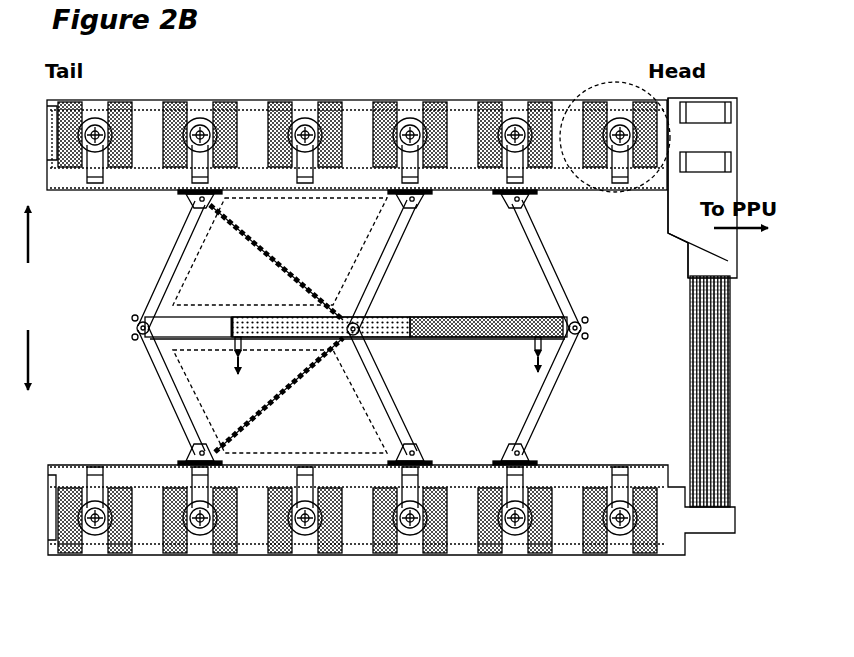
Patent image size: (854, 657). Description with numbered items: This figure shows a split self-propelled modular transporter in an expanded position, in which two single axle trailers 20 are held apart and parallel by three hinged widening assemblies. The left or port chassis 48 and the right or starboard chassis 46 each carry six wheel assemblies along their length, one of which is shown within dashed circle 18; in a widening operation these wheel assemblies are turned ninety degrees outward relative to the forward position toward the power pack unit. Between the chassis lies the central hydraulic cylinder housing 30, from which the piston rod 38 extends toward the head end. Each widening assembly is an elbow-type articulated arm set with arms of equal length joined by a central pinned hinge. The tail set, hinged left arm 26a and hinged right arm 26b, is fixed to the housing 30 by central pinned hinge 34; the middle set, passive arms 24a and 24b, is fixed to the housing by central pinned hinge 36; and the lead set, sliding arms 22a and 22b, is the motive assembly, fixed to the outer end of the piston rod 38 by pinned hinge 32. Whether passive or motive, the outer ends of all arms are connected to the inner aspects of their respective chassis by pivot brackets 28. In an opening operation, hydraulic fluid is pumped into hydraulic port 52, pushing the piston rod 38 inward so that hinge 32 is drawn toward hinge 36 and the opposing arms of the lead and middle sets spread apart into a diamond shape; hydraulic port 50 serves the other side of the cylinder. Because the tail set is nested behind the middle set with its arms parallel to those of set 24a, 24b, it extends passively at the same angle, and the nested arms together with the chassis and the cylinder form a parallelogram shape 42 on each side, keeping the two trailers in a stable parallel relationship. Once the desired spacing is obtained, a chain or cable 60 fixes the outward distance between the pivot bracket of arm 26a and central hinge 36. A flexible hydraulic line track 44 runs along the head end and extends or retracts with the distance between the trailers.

The single axle trailer 20 is at (244, 84).
The left or port chassis 48 is at (346, 99).
The right or starboard chassis 46 is at (150, 468).
The dashed circle 18 is at (590, 86).
The flexible hydraulic line track 44 is at (718, 508).
The chain or cable 60 is at (300, 248).
The hinged left arm 26a is at (152, 280).
The hinged right arm 26b is at (160, 385).
The passive arm 24a is at (388, 282).
The passive arm 24b is at (405, 405).
The sliding arm 22a is at (565, 275).
The sliding arm 22b is at (585, 390).
The pivot bracket 28 is at (258, 213).
The central hydraulic cylinder housing 30 is at (385, 310).
The piston rod 38 is at (475, 315).
The central pinned hinge 36 is at (385, 345).
The central pinned hinge 34 is at (132, 320).
The parallelogram shape 42 is at (135, 338).
The pinned hinge 32 is at (598, 333).
The hydraulic port 50 is at (244, 358).
The hydraulic port 52 is at (533, 355).